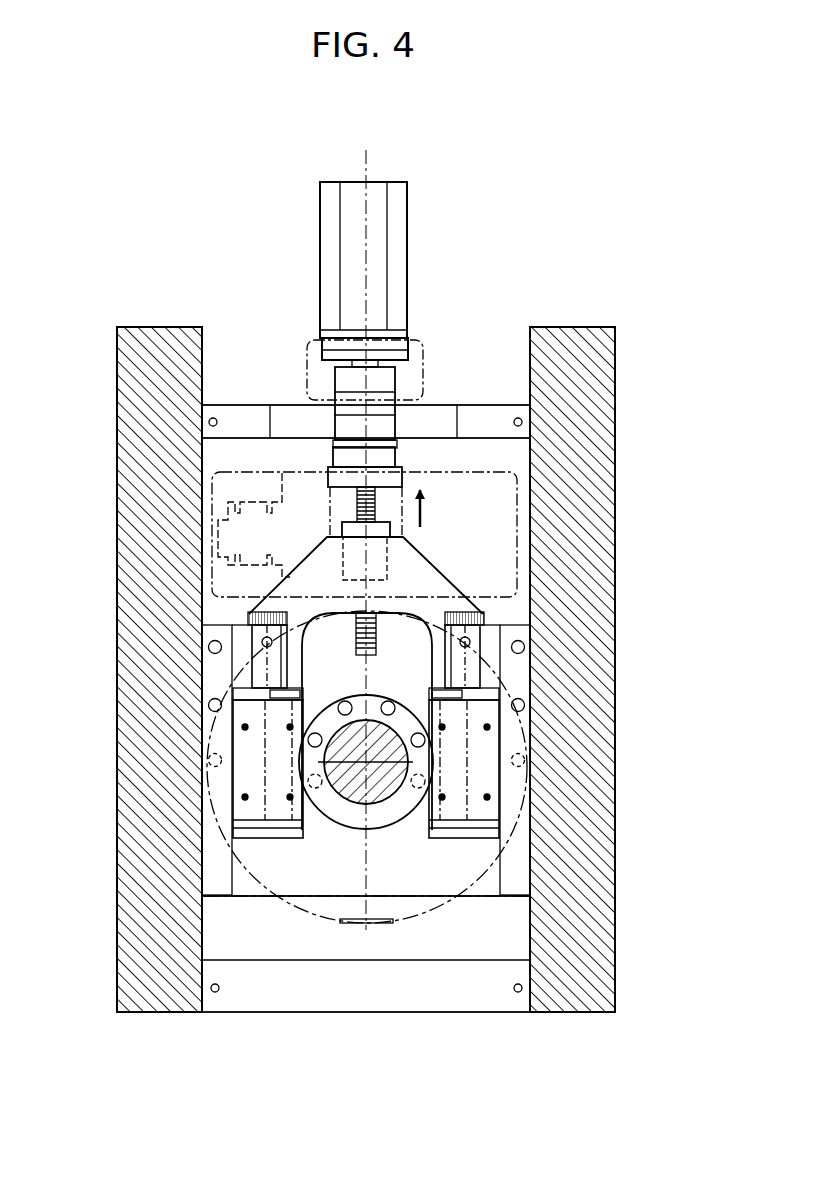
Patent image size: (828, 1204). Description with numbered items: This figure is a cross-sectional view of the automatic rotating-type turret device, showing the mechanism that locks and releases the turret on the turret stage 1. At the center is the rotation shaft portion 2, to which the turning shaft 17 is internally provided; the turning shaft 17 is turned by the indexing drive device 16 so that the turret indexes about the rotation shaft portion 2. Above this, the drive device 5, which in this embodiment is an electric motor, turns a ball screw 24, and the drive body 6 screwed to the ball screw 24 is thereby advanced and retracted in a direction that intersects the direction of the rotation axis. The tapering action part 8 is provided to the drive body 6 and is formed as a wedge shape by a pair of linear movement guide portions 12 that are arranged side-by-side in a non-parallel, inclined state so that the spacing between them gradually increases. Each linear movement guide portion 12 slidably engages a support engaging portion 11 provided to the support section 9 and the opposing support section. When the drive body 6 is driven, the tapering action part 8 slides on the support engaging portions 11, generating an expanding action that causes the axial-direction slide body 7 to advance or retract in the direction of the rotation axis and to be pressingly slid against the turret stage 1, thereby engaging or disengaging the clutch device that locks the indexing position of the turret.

The turret stage 1 is at (625, 360).
The rotation shaft portion 2 is at (393, 823).
The drive device 5 is at (405, 232).
The drive body 6 is at (390, 528).
The axial-direction slide body 7 is at (302, 872).
The tapering action part 8 is at (440, 618).
The support section 9 is at (240, 773).
The support engaging portion 11 is at (260, 683).
The linear movement guide portions 12 is at (258, 650).
The indexing drive device 16 is at (502, 472).
The turning shaft 17 is at (345, 743).
The ball screw 24 is at (377, 507).